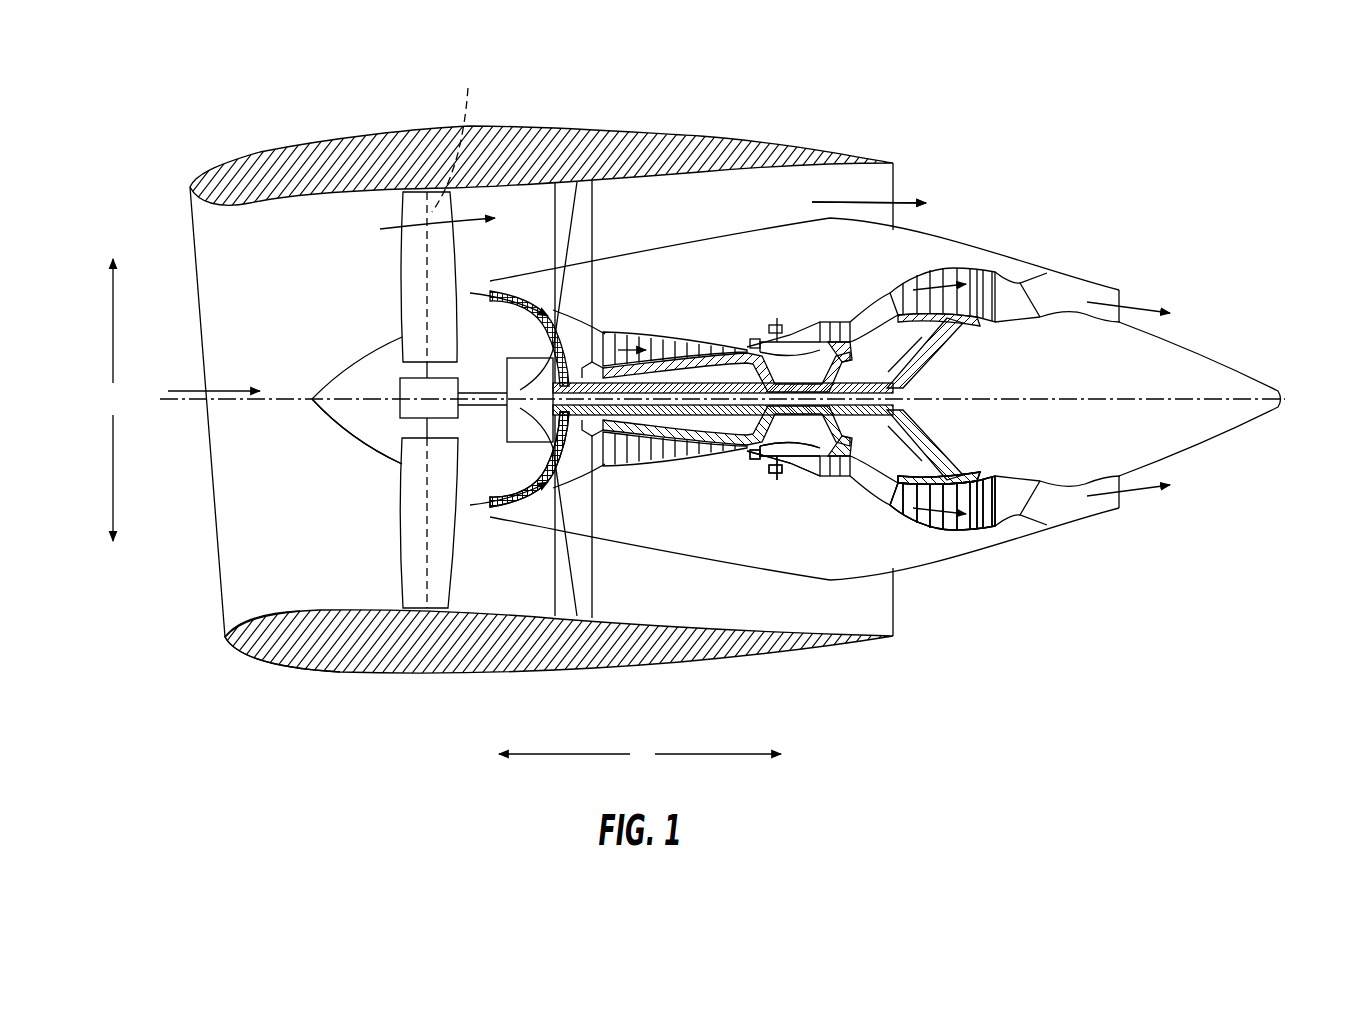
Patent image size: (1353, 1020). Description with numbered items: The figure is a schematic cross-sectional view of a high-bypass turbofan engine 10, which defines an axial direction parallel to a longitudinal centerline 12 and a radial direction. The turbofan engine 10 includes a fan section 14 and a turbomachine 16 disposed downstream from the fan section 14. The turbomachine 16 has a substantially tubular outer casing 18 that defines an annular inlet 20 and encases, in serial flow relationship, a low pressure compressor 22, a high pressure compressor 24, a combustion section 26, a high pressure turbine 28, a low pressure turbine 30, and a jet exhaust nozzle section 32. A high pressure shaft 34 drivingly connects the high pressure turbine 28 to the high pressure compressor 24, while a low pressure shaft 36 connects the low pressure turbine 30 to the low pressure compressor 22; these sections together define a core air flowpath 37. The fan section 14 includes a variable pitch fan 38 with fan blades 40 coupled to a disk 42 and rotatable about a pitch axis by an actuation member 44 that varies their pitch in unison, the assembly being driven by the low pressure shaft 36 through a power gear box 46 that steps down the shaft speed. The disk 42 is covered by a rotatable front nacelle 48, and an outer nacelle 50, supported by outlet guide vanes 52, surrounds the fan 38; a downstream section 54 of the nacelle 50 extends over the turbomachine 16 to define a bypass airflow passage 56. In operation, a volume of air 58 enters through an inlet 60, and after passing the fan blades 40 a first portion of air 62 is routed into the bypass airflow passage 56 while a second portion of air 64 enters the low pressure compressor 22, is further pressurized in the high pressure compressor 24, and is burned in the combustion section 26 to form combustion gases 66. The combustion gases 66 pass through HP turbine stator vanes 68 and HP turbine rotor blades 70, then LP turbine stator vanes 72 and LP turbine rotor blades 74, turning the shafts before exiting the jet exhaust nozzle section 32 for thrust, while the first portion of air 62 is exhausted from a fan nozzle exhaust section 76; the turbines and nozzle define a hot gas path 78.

The turbofan engine 10 is at (696, 394).
The longitudinal centerline 12 is at (722, 372).
The fan section 14 is at (547, 380).
The turbomachine 16 is at (875, 414).
The outer casing 18 is at (885, 410).
The annular inlet 20 is at (520, 497).
The low pressure compressor 22 is at (505, 422).
The high pressure compressor 24 is at (675, 422).
The combustion section 26 is at (773, 427).
The high pressure turbine 28 is at (946, 399).
The low pressure turbine 30 is at (1048, 432).
The jet exhaust nozzle section 32 is at (1102, 472).
The high pressure shaft 34 is at (859, 399).
The low pressure shaft 36 is at (939, 353).
The core air flowpath 37 is at (724, 541).
The variable pitch fan 38 is at (321, 590).
The fan blades 40 is at (377, 400).
The disk 42 is at (384, 400).
The actuation member 44 is at (337, 400).
The power gear box 46 is at (553, 350).
The rotatable front nacelle 48 is at (322, 481).
The outer nacelle 50 is at (559, 676).
The outlet guide vanes 52 is at (606, 399).
The downstream section of the nacelle 54 is at (541, 145).
The bypass airflow passage 56 is at (832, 207).
The volume of air 58 is at (197, 412).
The inlet 60 is at (241, 641).
The first portion of air 62 is at (547, 237).
The second portion of air 64 is at (526, 368).
The combustion gases 66 is at (724, 349).
The HP turbine stator vanes 68 is at (787, 495).
The HP turbine rotor blades 70 is at (925, 442).
The LP turbine stator vanes 72 is at (923, 522).
The LP turbine rotor blades 74 is at (942, 545).
The fan nozzle exhaust section 76 is at (918, 390).
The hot gas path 78 is at (836, 270).